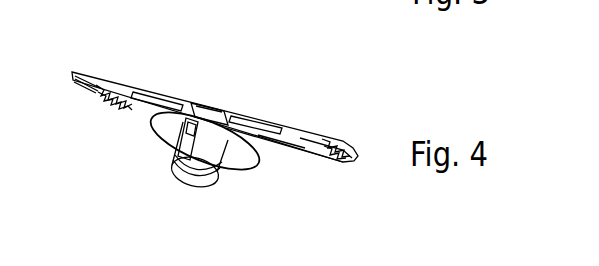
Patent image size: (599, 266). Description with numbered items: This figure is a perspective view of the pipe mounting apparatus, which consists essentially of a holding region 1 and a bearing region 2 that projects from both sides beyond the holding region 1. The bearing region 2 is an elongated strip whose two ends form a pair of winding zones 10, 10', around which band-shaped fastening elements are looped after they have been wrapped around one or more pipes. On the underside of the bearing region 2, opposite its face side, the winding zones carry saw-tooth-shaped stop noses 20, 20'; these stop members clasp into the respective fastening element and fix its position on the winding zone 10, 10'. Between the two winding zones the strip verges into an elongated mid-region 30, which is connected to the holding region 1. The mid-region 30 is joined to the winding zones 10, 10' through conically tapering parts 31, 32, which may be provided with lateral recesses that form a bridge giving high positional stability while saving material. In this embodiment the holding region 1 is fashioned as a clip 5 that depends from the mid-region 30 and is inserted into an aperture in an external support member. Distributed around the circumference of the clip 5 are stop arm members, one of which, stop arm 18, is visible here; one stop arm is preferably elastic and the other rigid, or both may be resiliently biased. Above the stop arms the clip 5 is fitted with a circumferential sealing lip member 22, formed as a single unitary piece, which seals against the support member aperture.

The holding region 1 is at (207, 157).
The bearing region 2 is at (221, 70).
The clip 5 is at (202, 170).
The winding zone 10 is at (206, 83).
The winding zone 10' is at (347, 104).
The stop arm member 18 is at (154, 143).
The stop nose 20 is at (91, 117).
The stop nose 20' is at (330, 176).
The circumferential sealing lip member 22 is at (213, 152).
The mid-region 30 is at (212, 95).
The conically tapering part 31 is at (152, 76).
The conically tapering part 32 is at (256, 105).